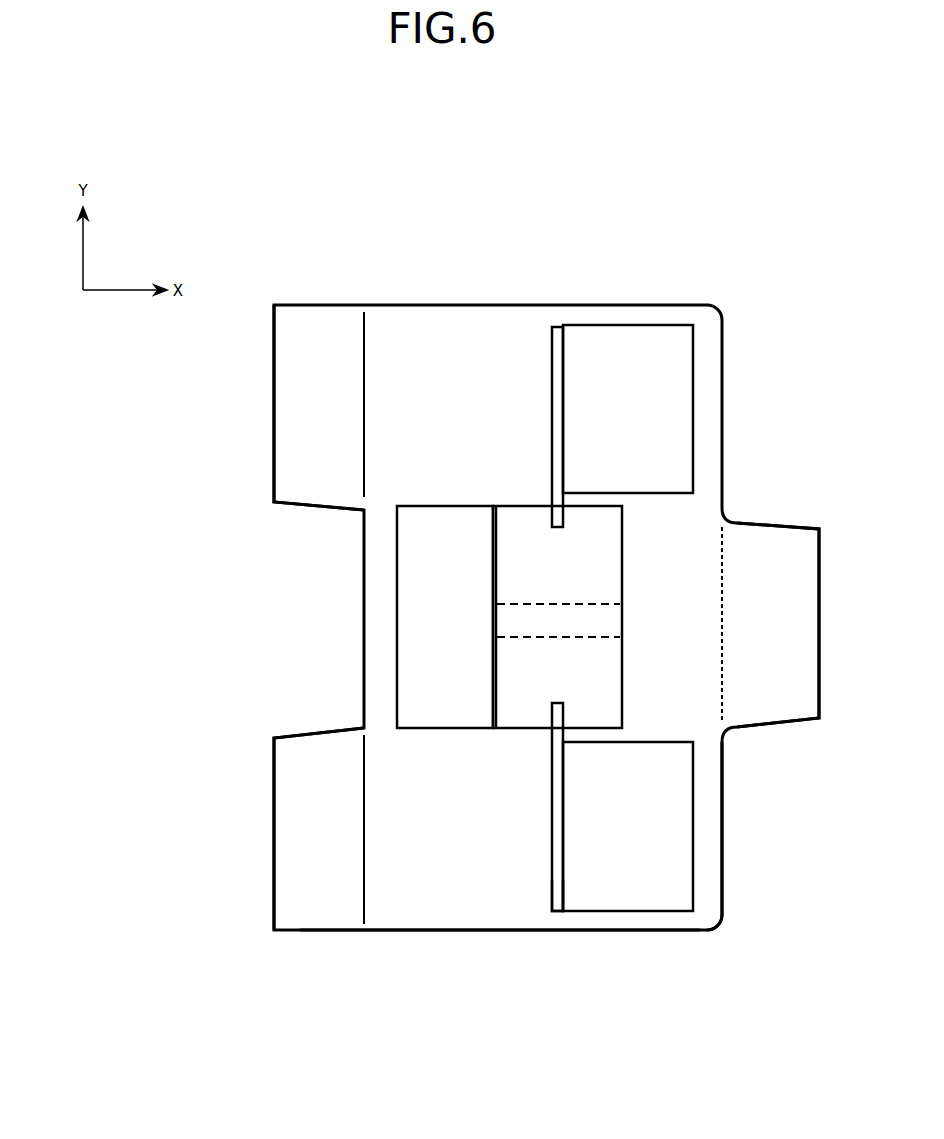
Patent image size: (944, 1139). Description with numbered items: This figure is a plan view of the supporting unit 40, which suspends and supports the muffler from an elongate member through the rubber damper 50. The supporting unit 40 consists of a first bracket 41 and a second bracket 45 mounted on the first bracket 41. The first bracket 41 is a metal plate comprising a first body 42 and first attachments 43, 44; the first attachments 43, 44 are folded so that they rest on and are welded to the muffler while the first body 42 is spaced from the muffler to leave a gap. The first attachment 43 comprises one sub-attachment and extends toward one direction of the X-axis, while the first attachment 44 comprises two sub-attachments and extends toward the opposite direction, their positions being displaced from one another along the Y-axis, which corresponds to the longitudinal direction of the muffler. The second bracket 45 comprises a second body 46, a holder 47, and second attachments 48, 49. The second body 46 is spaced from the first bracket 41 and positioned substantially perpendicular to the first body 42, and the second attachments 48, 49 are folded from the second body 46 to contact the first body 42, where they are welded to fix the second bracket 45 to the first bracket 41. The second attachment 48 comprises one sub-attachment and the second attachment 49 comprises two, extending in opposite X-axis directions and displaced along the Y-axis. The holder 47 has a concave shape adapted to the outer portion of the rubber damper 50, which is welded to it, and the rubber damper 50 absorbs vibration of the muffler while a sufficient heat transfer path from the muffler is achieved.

The supporting unit 40 is at (420, 276).
The first bracket 41 is at (403, 933).
The first body 42 is at (703, 917).
The first attachment 43 is at (780, 535).
The first attachment 44 is at (279, 476).
The second bracket 45 is at (558, 917).
The second body 46 is at (558, 334).
The holder 47 is at (558, 334).
The second attachment 48 is at (662, 335).
The second attachment 49 is at (447, 512).
The rubber damper 50 is at (598, 570).